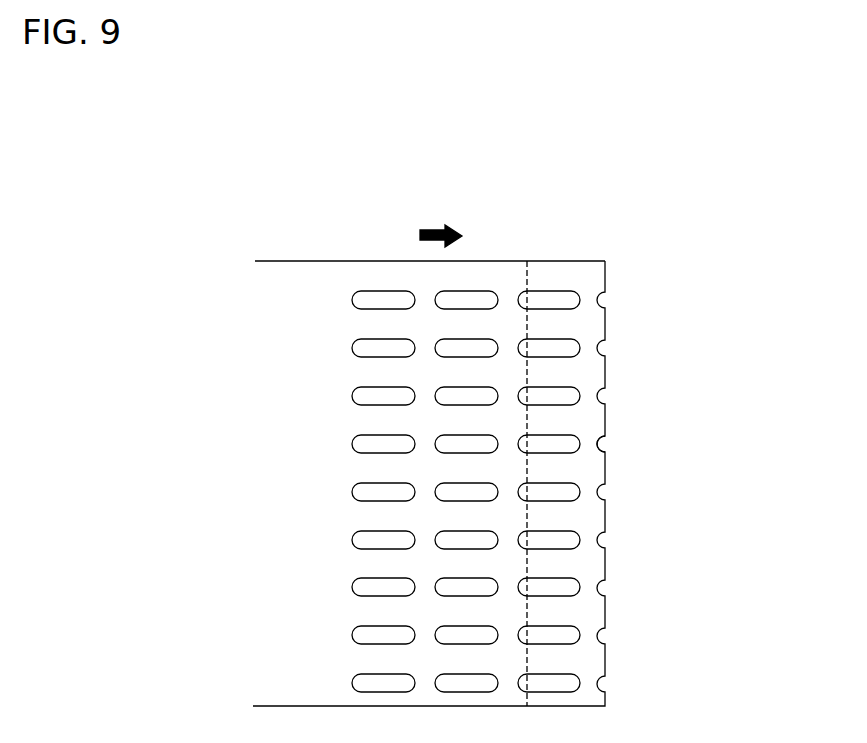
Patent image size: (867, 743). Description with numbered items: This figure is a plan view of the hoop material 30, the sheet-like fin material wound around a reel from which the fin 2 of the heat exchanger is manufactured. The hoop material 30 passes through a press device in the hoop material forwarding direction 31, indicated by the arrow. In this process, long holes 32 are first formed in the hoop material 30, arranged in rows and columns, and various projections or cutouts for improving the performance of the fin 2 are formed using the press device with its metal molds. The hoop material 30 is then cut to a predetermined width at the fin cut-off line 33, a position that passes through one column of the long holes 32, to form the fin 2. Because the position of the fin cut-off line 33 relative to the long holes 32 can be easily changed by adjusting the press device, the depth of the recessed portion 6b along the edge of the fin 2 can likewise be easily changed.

The fin 2 is at (592, 612).
The recessed portion 6b is at (606, 442).
The hoop material 30 is at (296, 262).
The hoop material forwarding direction 31 is at (421, 228).
The long holes 32 is at (366, 291).
The fin cut-off line 33 is at (528, 290).